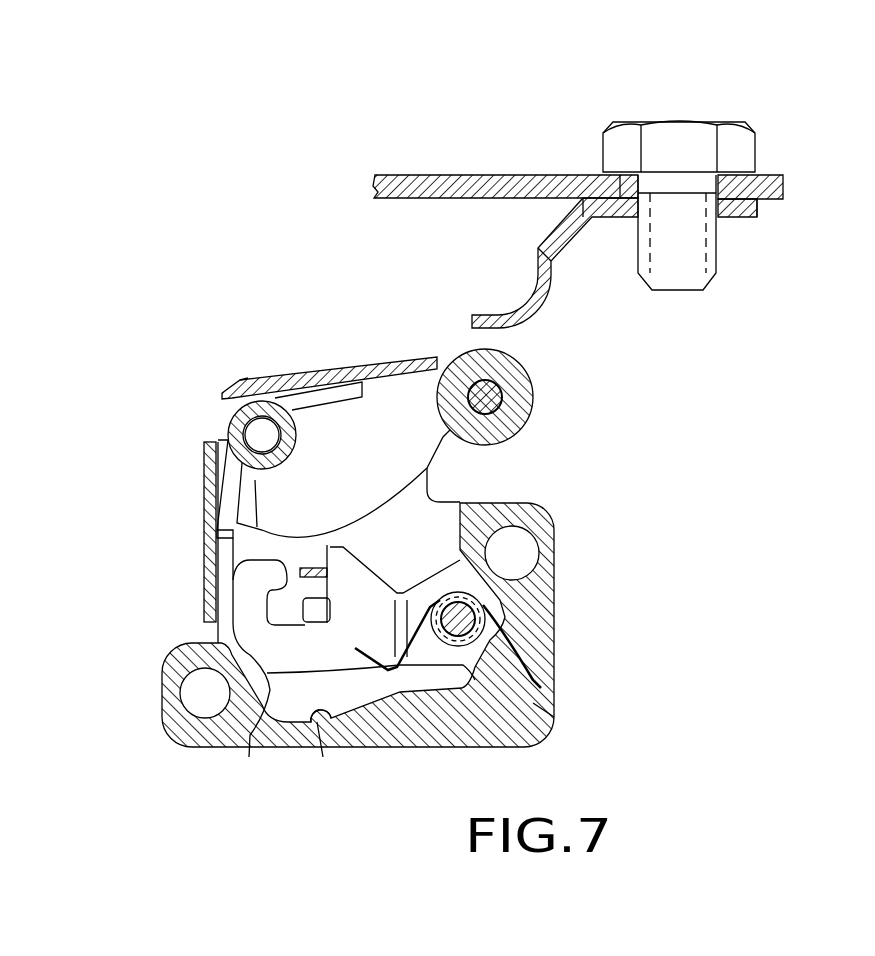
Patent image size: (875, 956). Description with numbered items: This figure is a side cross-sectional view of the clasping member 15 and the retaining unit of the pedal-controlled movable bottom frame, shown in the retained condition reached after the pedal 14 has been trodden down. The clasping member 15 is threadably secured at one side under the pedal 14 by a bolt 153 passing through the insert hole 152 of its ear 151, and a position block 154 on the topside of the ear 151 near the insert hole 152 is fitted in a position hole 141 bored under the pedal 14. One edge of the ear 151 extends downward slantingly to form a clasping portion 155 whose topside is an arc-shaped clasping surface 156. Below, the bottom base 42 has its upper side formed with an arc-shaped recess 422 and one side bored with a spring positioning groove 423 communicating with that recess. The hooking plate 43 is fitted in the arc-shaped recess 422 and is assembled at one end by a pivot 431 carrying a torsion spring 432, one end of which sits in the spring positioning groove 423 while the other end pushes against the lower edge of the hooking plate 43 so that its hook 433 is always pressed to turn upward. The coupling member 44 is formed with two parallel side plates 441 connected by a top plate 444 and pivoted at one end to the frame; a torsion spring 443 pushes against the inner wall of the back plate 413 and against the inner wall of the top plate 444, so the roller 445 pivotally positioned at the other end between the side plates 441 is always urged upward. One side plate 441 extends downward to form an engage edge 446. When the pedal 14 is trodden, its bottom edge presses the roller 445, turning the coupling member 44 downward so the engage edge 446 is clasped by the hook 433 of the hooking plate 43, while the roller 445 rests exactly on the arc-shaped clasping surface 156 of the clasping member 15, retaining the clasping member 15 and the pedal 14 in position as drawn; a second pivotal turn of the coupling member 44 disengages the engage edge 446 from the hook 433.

The pedal 14 is at (422, 173).
The position hole 141 is at (620, 173).
The clasping member 15 is at (742, 218).
The ear 151 is at (745, 190).
The insert hole 152 is at (720, 217).
The bolt 153 is at (685, 122).
The position block 154 is at (580, 173).
The clasping portion 155 is at (550, 322).
The arc-shaped clasping surface 156 is at (530, 282).
The bottom base 42 is at (556, 580).
The arc-shaped recess 422 is at (322, 745).
The spring positioning groove 423 is at (533, 703).
The hooking plate 43 is at (265, 745).
The pivot 431 is at (463, 610).
The torsion spring 432 is at (447, 640).
The coupling member 44 is at (248, 378).
The side plates 441 is at (340, 428).
The torsion spring 443 is at (227, 440).
The top plate 444 is at (293, 377).
The roller 445 is at (467, 360).
The engage edge 446 is at (253, 597).
The back plate 413 is at (204, 570).
The hook 433 is at (230, 538).